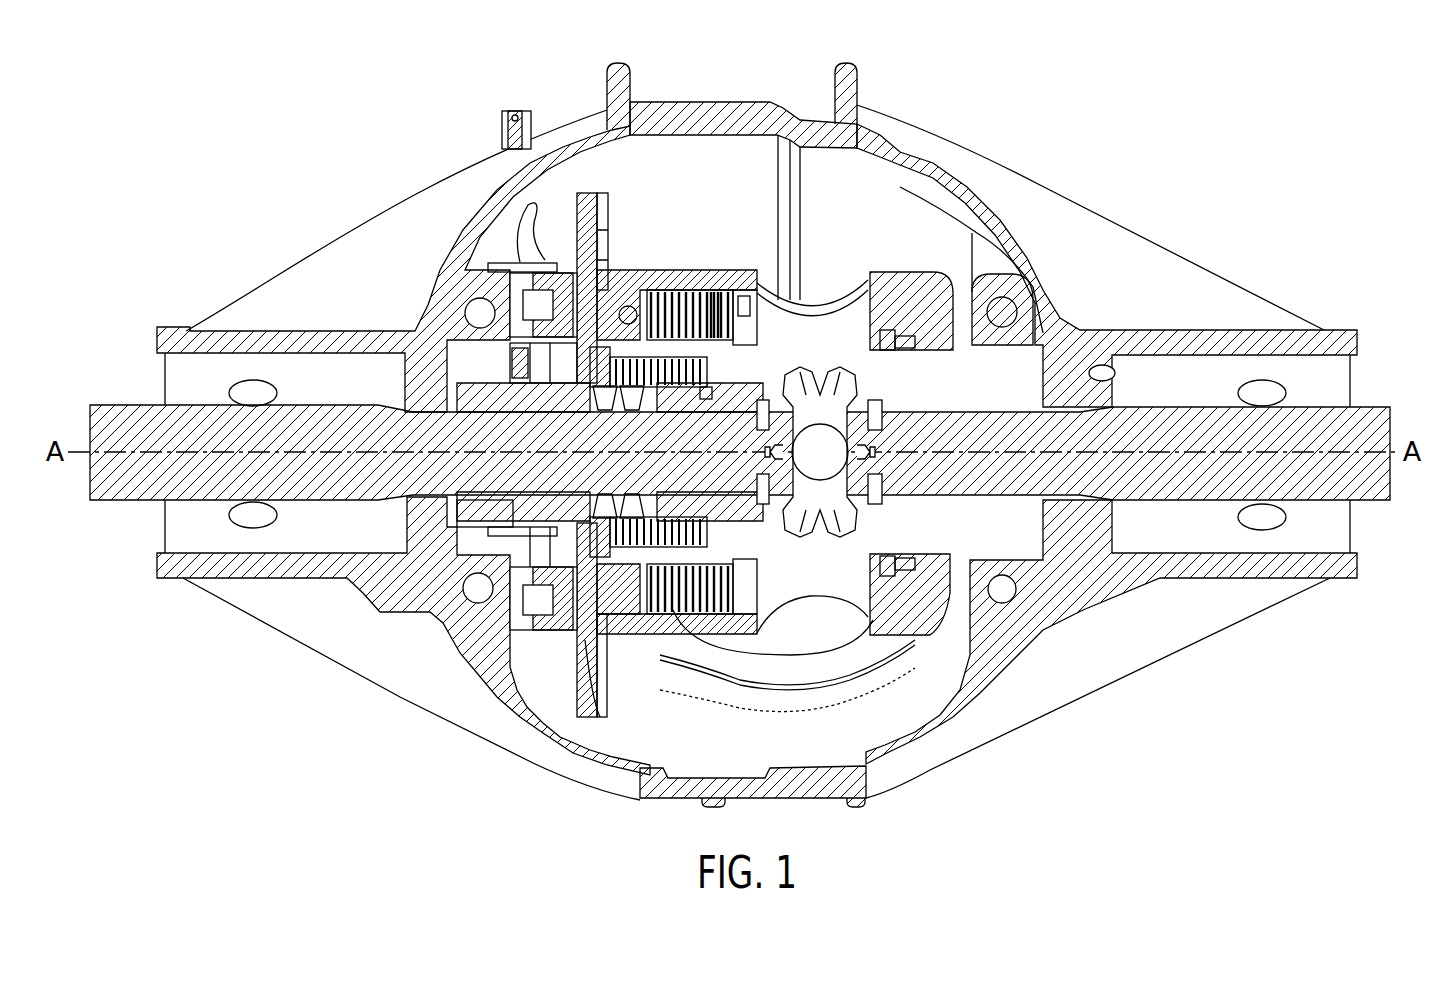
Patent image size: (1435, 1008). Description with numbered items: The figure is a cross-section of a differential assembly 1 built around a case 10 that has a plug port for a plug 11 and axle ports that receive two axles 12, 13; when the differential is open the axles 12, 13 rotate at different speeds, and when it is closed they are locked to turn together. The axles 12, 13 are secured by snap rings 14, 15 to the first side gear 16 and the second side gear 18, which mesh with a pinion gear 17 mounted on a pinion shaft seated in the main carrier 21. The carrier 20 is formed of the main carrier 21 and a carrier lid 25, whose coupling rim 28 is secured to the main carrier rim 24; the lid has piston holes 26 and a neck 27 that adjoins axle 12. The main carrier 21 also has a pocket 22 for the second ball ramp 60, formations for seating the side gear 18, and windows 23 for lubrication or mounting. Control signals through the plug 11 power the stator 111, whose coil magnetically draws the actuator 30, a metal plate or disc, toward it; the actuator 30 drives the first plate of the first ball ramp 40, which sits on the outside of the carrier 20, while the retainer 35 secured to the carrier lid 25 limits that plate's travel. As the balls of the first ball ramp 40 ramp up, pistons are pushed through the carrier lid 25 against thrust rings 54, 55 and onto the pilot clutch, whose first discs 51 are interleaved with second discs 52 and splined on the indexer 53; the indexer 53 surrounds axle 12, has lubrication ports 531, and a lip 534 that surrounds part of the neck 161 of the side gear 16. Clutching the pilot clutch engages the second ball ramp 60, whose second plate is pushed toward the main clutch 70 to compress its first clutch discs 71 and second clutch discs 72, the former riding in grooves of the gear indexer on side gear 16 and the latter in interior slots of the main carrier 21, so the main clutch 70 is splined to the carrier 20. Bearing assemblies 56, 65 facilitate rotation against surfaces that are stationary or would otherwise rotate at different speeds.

The differential assembly 1 is at (131, 114).
The case 10 is at (232, 318).
The plug 11 is at (512, 110).
The axle 12 is at (118, 403).
The axle 13 is at (1380, 405).
The snap ring 14 is at (797, 537).
The snap ring 15 is at (855, 534).
The first side gear 16 is at (770, 340).
The pinion gear 17 is at (800, 372).
The second side gear 18 is at (893, 350).
The carrier 20 is at (949, 631).
The main carrier 21 is at (940, 300).
The pocket 22 is at (950, 608).
The windows 23 is at (866, 612).
The main carrier rim 24 is at (598, 655).
The carrier lid 25 is at (590, 193).
The piston holes 26 is at (578, 642).
The neck 27 is at (478, 532).
The coupling rim 28 is at (585, 640).
The actuator 30 is at (513, 626).
The retainer 35 is at (510, 353).
The first ball ramp 40 is at (556, 314).
The first discs 51 is at (693, 408).
The second discs 52 is at (712, 366).
The indexer 53 is at (603, 497).
The thrust ring 54 is at (590, 388).
The thrust ring 55 is at (605, 386).
The bearing assembly 56 is at (706, 394).
The second ball ramp 60 is at (628, 279).
The bearing assembly 65 is at (602, 278).
The main clutch 70 is at (689, 264).
The first clutch discs 71 is at (713, 288).
The second clutch discs 72 is at (745, 288).
The stator 111 is at (558, 627).
The neck 161 is at (670, 503).
The lubrication ports 531 is at (647, 387).
The lip 534 is at (663, 387).